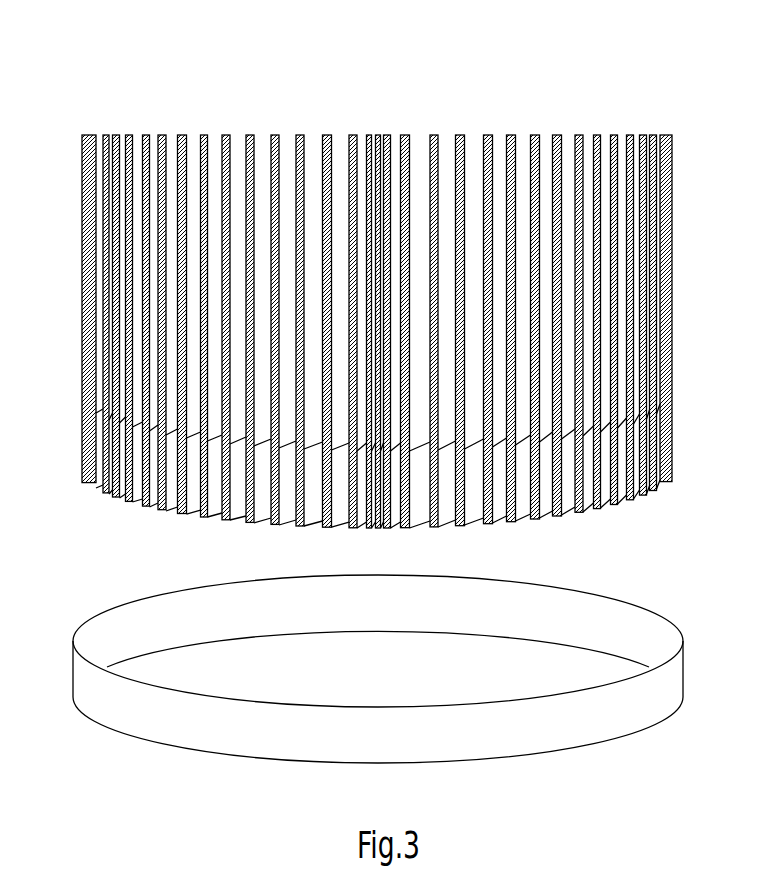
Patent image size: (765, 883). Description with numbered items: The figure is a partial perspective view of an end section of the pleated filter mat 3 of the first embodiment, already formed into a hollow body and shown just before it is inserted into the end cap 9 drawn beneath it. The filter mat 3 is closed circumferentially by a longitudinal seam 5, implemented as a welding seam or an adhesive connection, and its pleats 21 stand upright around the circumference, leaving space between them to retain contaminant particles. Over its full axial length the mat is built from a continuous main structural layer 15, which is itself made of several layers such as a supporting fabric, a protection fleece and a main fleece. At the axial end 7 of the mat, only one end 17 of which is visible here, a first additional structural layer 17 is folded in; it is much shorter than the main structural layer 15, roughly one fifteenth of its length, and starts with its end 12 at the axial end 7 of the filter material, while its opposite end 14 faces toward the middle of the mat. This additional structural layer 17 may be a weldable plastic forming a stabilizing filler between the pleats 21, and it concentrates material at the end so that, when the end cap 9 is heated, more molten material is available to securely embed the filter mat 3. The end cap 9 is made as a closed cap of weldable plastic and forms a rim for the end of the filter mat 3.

The filter mat 3 is at (193, 233).
The pleats 21 is at (250, 135).
The longitudinal seam 5 is at (378, 200).
The main structural layer 15 is at (140, 293).
The first additional structural layer 17 is at (85, 465).
The axial end 7 is at (137, 497).
The end of the additional structural layer 12 is at (570, 503).
The end of the additional structural layer 14 is at (603, 417).
The end cap 9 is at (113, 705).